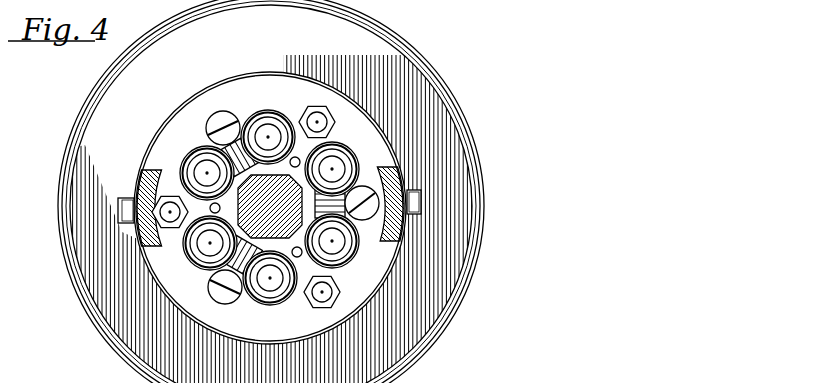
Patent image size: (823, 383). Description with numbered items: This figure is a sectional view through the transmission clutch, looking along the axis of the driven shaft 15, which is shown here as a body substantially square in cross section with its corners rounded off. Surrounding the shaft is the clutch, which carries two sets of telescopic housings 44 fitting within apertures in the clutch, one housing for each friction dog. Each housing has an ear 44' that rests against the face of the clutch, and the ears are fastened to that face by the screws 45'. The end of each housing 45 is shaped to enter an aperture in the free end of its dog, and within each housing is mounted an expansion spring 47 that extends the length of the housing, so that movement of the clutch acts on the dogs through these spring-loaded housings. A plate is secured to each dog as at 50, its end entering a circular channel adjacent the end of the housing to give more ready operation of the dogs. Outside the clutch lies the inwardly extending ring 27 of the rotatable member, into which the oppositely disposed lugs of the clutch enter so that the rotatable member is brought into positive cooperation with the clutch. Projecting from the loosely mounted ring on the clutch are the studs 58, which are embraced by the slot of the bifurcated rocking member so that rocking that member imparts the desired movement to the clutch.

The driven shaft 15 is at (221, 237).
The inwardly extending ring 27 is at (447, 297).
The telescopic housings 44 is at (350, 183).
The ear 44' is at (208, 128).
The housing 45 is at (364, 226).
The screws 45' is at (238, 211).
The expansion spring 47 is at (281, 300).
The plate securing point 50 is at (376, 304).
The studs 58 is at (420, 208).